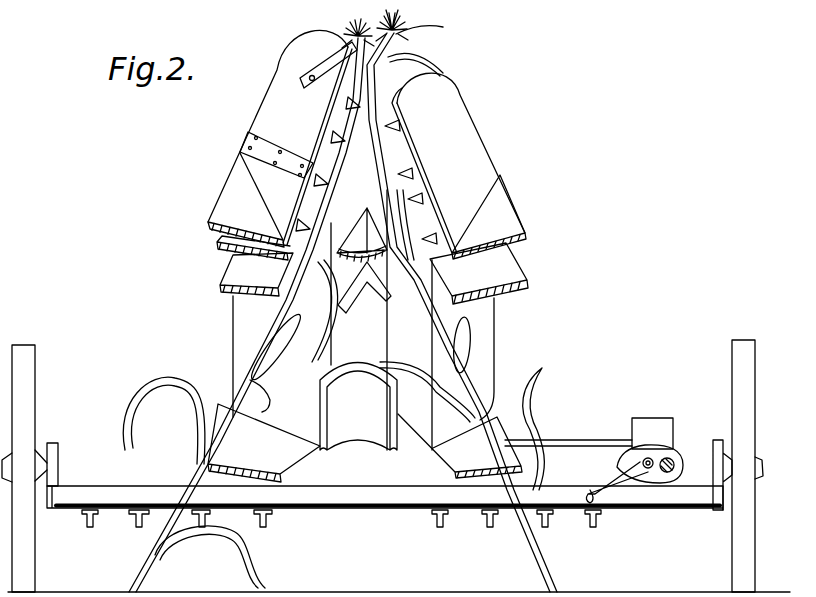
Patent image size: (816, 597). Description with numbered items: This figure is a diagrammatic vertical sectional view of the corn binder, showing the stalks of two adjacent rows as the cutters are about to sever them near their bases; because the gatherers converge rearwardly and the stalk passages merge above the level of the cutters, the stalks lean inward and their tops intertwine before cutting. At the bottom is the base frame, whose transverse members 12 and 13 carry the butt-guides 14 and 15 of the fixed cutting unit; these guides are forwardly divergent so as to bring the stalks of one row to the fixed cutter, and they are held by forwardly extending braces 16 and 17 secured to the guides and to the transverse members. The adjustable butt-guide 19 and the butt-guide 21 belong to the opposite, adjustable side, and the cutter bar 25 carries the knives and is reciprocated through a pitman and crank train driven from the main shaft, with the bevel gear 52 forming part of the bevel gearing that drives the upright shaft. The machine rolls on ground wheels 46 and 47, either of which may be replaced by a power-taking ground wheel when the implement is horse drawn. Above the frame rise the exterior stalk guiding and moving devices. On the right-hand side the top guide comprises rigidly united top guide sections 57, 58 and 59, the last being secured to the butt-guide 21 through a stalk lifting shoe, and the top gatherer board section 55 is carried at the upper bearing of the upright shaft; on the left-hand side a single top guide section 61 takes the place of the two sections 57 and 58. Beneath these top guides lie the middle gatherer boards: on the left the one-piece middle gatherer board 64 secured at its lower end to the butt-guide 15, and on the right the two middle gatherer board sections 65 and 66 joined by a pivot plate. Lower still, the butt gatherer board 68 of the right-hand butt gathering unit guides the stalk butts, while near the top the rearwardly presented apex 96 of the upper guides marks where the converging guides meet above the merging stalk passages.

The transverse member 12 is at (700, 498).
The transverse member 13 is at (670, 508).
The butt-guide 14 is at (496, 518).
The butt-guide 15 is at (556, 520).
The brace 16 is at (446, 520).
The brace 17 is at (598, 519).
The butt-guide 19 is at (140, 518).
The butt-guide 21 is at (97, 520).
The cutter bar 25 is at (373, 510).
The ground wheel 46 is at (733, 345).
The ground wheel 47 is at (35, 353).
The bevel gear 52 is at (607, 483).
The top gatherer board section 55 is at (217, 243).
The top guide section 57 is at (279, 72).
The top guide section 58 is at (245, 150).
The top guide section 59 is at (227, 212).
The top guide section 61 is at (457, 120).
The middle gatherer board 64 is at (507, 275).
The middle gatherer board section 65 is at (268, 135).
The middle gatherer board section 66 is at (237, 275).
The butt gatherer board 68 is at (283, 455).
The rearwardly presented apex 96 is at (363, 193).